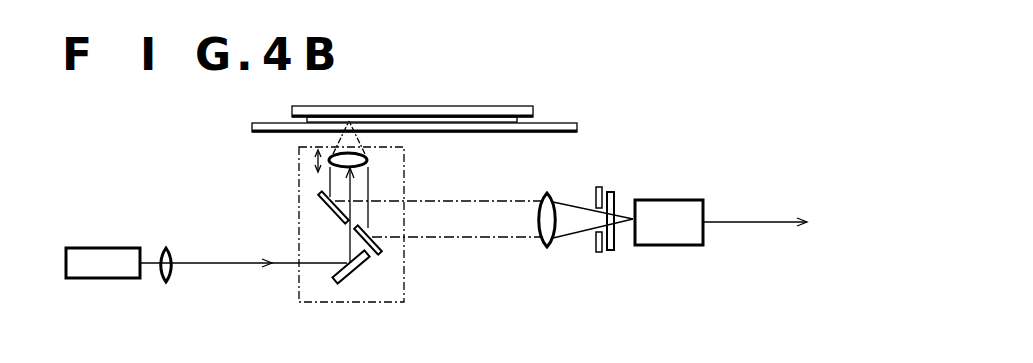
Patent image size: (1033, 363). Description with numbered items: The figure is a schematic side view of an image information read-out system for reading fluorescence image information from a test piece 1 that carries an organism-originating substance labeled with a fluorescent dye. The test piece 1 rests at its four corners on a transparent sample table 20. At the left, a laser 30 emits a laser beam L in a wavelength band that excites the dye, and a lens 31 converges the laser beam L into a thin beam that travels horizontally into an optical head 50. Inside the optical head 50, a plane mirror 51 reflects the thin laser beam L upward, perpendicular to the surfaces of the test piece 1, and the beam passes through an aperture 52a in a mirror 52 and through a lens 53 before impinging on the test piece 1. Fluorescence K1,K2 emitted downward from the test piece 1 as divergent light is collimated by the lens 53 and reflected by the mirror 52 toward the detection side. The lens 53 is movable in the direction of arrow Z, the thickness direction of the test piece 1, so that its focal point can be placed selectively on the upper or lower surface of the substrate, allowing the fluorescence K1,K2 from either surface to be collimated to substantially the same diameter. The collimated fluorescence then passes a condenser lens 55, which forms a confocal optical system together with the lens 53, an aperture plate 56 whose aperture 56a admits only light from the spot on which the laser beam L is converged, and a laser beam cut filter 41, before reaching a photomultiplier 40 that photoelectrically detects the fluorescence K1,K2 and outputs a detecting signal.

The test piece 1 is at (485, 107).
The transparent sample table 20 is at (578, 128).
The laser 30 is at (110, 248).
The lens 31 is at (171, 249).
The laser beam L is at (207, 263).
The optical head 50 is at (372, 303).
The plane mirror 51 is at (350, 284).
The mirror 52 is at (380, 256).
The aperture 52a is at (346, 224).
The lens 53 is at (372, 162).
The direction of arrow z Z is at (315, 160).
The fluorescence K1,K2 is at (486, 240).
The condenser lens 55 is at (545, 208).
The aperture 56a is at (593, 216).
The aperture plate 56 is at (597, 253).
The laser beam cut filter 41 is at (612, 251).
The photomultiplier 40 is at (698, 200).